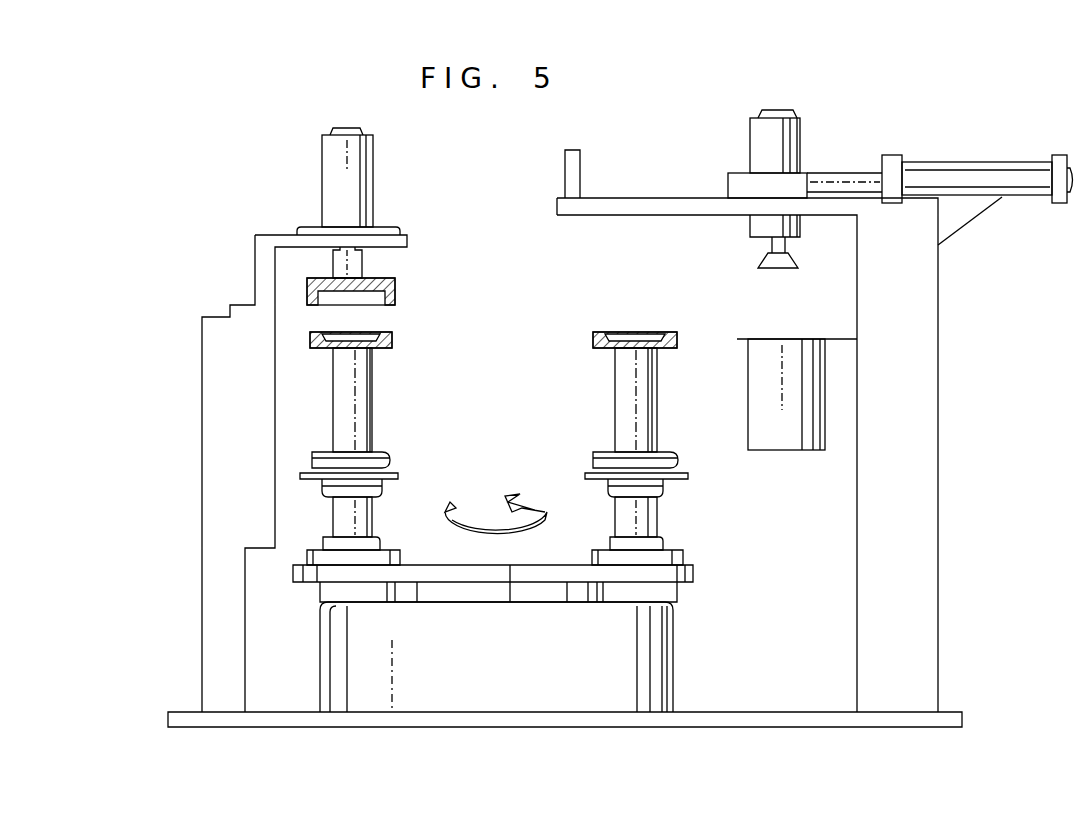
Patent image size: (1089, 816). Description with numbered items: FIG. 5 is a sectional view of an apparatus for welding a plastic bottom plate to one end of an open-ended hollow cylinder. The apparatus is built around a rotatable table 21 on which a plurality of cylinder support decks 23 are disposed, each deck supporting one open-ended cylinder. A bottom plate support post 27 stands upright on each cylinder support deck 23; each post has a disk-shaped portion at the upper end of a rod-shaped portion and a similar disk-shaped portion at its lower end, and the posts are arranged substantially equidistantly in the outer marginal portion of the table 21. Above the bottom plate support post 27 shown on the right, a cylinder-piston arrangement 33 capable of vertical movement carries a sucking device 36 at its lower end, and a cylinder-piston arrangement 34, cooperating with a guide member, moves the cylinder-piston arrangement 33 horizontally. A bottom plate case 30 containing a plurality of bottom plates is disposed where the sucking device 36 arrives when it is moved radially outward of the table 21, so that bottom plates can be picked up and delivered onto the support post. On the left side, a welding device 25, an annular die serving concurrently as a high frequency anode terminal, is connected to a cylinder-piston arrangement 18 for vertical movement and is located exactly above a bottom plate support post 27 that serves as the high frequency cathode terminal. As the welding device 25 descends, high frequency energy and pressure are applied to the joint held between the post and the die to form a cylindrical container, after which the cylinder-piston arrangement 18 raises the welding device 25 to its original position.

The cylinder-piston arrangement 18 is at (373, 172).
The welding device 25 is at (395, 288).
The bottom plate support post 27 is at (402, 332).
The cylinder support deck 23 is at (398, 477).
The rotatable table 21 is at (693, 567).
The bottom plate case 30 is at (792, 452).
The cylinder-piston arrangement 33 is at (800, 140).
The cylinder-piston arrangement 34 is at (995, 162).
The sucking device 36 is at (758, 265).